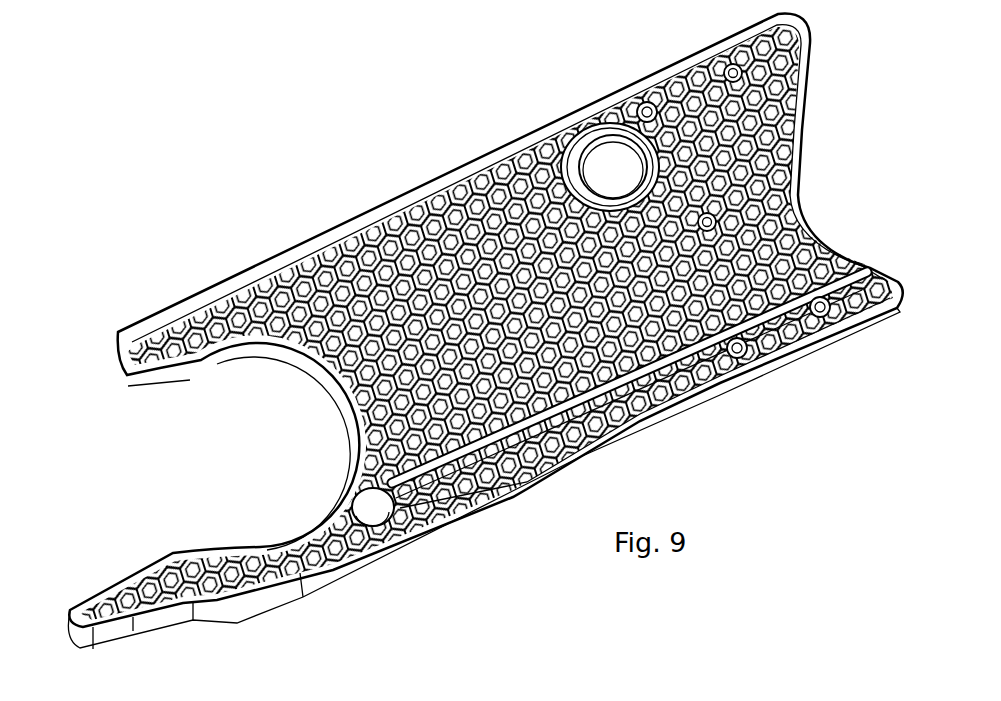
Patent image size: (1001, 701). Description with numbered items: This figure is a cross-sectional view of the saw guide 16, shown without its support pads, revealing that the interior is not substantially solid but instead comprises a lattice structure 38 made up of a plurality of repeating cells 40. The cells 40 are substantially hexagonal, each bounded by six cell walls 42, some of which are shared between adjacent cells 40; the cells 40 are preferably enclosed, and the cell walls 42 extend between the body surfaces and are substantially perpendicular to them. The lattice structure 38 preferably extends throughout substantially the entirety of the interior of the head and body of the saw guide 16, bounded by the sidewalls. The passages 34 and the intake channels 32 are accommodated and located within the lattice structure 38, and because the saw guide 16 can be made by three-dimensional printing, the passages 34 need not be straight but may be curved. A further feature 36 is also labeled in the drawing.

The saw guide 16 is at (233, 217).
The intake channels 32 is at (360, 499).
The passages 34 is at (557, 463).
The boss 36 is at (717, 387).
The lattice structure 38 is at (392, 198).
The cells 40 is at (473, 187).
The cell walls 42 is at (510, 143).